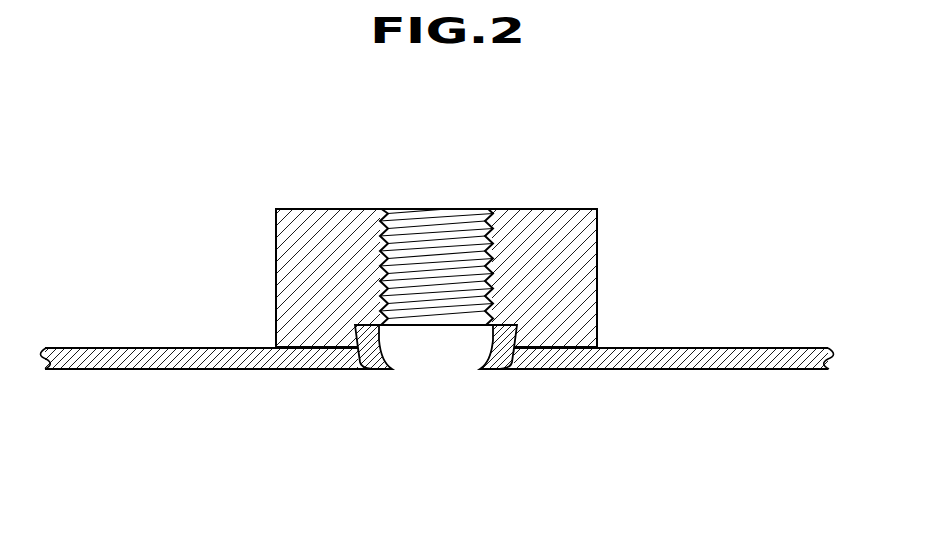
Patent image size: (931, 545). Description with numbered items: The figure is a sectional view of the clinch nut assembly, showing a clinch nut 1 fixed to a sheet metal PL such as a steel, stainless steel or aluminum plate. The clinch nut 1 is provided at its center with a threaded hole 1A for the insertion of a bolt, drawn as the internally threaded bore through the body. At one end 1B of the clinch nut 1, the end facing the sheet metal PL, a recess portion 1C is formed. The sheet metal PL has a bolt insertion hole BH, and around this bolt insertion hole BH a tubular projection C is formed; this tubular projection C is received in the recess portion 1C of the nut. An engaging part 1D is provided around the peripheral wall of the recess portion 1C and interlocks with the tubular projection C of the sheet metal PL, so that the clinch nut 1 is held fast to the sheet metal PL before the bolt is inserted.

The clinch nut 1 is at (623, 215).
The threaded hole 1A is at (438, 245).
The one end of the clinch nut 1B is at (309, 350).
The recess portion 1C is at (440, 326).
The engaging part 1D is at (327, 343).
The bolt insertion hole BH is at (392, 369).
The tubular projection C is at (488, 356).
The sheet metal PL is at (780, 360).